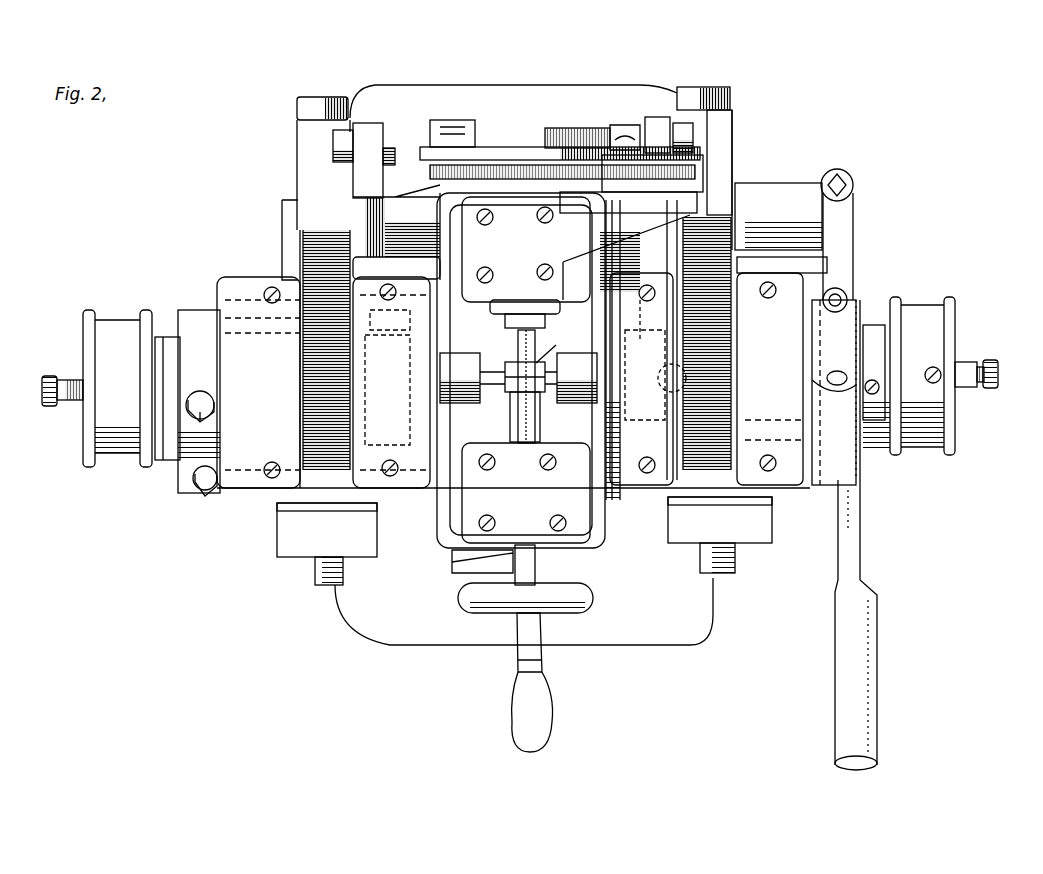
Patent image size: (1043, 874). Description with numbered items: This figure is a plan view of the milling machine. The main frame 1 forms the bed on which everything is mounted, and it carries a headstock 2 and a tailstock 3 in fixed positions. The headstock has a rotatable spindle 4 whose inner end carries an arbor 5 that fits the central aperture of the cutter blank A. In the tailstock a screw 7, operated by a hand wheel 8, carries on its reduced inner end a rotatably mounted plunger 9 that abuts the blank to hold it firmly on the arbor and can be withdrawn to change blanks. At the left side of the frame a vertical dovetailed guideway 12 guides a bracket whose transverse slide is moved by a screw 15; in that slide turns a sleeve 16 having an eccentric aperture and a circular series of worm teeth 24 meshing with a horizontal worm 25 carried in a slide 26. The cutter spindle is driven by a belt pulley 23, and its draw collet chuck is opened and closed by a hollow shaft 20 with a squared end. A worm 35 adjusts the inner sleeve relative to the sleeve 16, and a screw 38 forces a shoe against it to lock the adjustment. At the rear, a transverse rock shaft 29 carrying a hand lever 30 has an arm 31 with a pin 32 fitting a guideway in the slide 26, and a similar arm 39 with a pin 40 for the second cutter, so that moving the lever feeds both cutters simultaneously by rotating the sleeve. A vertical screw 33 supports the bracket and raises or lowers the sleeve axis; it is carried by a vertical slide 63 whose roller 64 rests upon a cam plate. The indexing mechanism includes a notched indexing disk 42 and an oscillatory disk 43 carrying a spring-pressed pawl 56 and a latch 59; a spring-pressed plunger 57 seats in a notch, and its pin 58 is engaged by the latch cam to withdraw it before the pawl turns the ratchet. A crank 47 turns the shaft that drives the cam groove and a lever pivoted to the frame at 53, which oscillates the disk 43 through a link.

The main frame 1 is at (1000, 372).
The headstock 2 is at (526, 249).
The tailstock 3 is at (702, 80).
The spindle 4 is at (835, 240).
The arbor 5 is at (510, 33).
The screw 7 is at (457, 573).
The hand wheel 8 is at (593, 595).
The plunger 9 is at (512, 420).
The vertical dovetailed guideway 12 is at (625, 500).
The screw 15 is at (735, 558).
The sleeve 16 is at (730, 360).
The hollow shaft 20 is at (967, 362).
The belt pulley 23 is at (930, 300).
The worm teeth 24 is at (720, 342).
The worm 25 is at (765, 233).
The slide 26 is at (732, 140).
The rock shaft 29 is at (858, 212).
The hand lever 30 is at (870, 690).
The arm 31 is at (652, 117).
The pin 32 is at (693, 128).
The vertical screw 33 is at (672, 368).
The worm 35 is at (847, 297).
The screw 38 is at (825, 485).
The arm 39 is at (388, 139).
The pin 40 is at (352, 132).
The indexing disk 42 is at (430, 172).
The oscillatory disk 43 is at (420, 155).
The crank 47 is at (545, 698).
The pivot 53 is at (613, 125).
The spring-pressed pawl 56 is at (470, 132).
The spring-pressed plunger 57 is at (600, 195).
The pin 58 is at (620, 160).
The latch 59 is at (572, 134).
The vertical slide 63 is at (645, 360).
The roller 64 is at (618, 350).
The cutter blank A is at (500, 368).